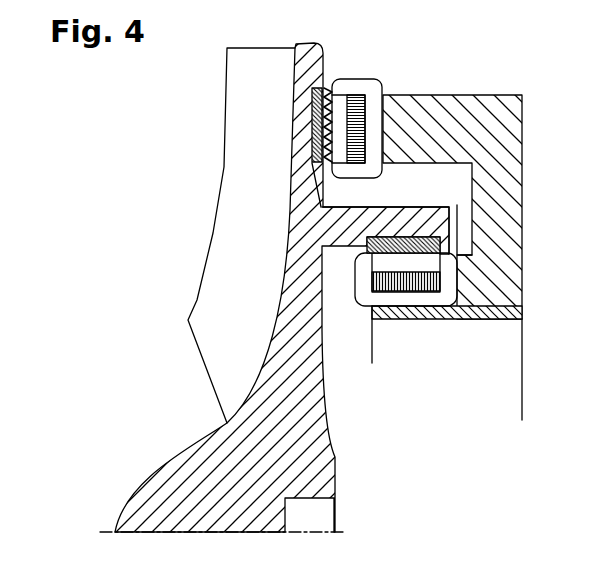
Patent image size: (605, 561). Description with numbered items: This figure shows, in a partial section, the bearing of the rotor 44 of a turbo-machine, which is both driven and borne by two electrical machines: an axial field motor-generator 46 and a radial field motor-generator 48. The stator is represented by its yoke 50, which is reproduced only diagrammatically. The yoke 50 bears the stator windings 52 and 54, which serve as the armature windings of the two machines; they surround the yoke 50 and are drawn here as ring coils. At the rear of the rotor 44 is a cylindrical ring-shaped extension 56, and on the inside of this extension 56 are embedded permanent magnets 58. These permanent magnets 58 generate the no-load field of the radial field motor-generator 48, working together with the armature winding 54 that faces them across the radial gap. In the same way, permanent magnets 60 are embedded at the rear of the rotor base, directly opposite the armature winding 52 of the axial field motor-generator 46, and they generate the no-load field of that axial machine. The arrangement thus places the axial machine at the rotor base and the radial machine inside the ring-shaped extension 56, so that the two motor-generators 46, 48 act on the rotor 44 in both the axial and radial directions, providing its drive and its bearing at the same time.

The rotor 44 is at (172, 482).
The axial field motor-generator 46 is at (394, 120).
The radial field motor-generator 48 is at (432, 321).
The yoke 50 is at (357, 102).
The stator winding 52 is at (375, 102).
The stator winding 54 is at (458, 305).
The cylindrical ring-shaped extension 56 is at (447, 206).
The permanent magnets 58 is at (440, 232).
The permanent magnets 60 is at (317, 123).